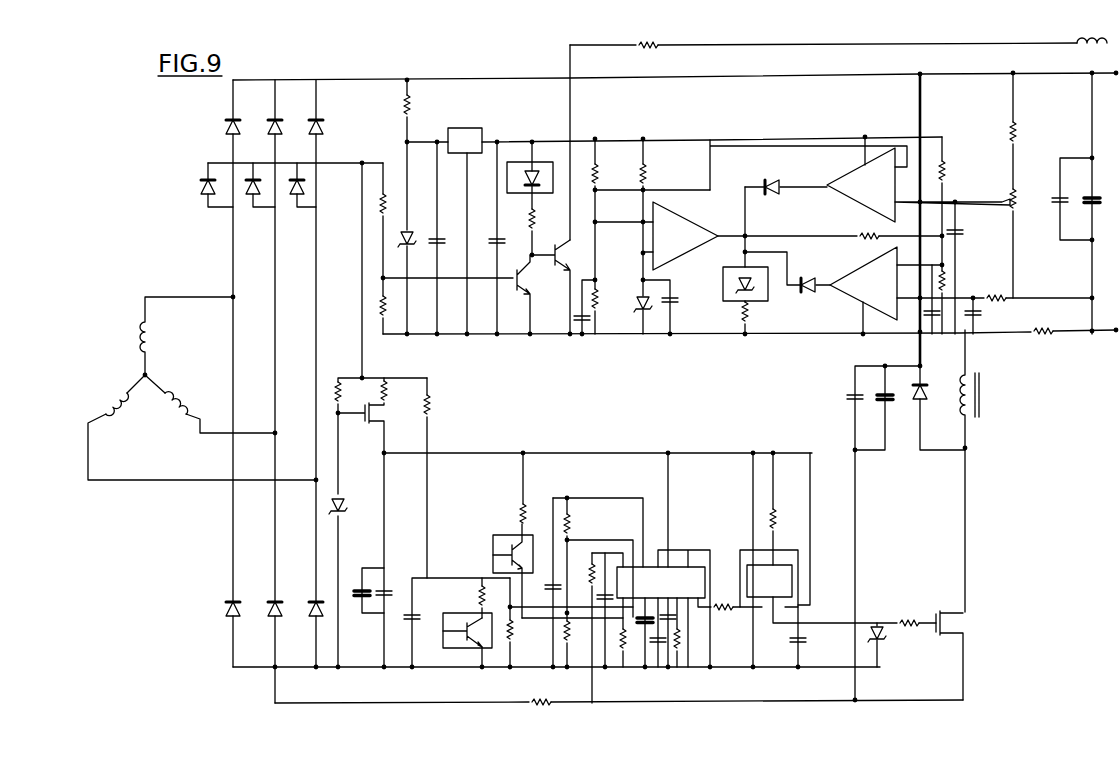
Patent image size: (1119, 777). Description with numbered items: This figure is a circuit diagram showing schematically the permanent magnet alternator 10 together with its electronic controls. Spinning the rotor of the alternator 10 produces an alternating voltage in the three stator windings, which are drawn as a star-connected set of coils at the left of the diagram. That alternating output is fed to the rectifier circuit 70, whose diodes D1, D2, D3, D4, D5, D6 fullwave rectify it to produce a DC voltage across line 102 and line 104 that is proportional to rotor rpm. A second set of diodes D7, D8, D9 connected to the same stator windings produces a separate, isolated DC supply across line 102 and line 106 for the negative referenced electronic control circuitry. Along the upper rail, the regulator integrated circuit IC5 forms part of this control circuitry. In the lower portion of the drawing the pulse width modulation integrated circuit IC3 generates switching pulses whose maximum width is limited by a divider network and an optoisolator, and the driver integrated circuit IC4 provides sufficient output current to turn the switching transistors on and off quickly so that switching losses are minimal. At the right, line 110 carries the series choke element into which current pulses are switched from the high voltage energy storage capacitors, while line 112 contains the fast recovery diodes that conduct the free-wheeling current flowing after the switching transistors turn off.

The permanent magnet alternator 10 is at (133, 353).
The rectifier circuit 70 is at (232, 391).
The line 102 is at (370, 667).
The line 104 is at (356, 80).
The line 106 is at (338, 163).
The line 110 is at (968, 347).
The line 112 is at (920, 348).
The diode D1 is at (216, 627).
The diode D2 is at (260, 627).
The diode D3 is at (302, 627).
The diode D4 is at (218, 111).
The diode D5 is at (260, 111).
The diode D6 is at (302, 111).
The diode D7 is at (208, 200).
The diode D8 is at (257, 200).
The diode D9 is at (298, 200).
The PWM integrated circuit IC3 is at (661, 582).
The driver integrated circuit IC4 is at (769, 581).
The regulator integrated circuit IC5 is at (466, 125).